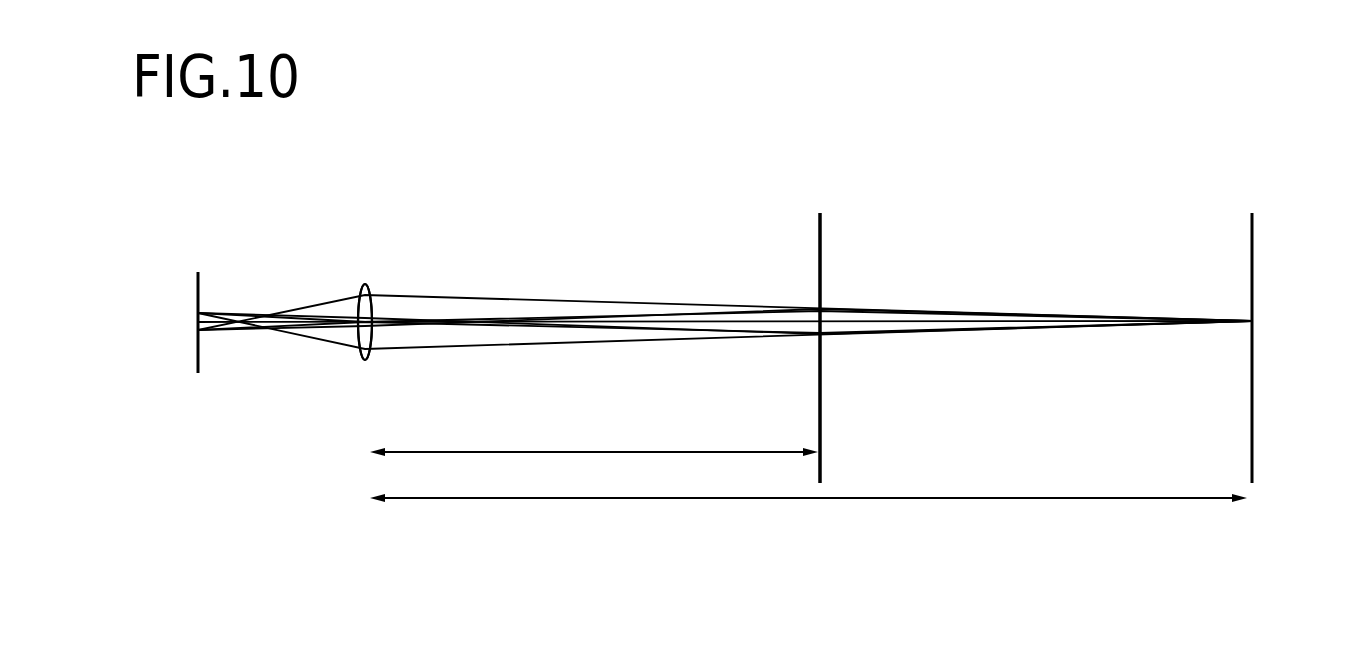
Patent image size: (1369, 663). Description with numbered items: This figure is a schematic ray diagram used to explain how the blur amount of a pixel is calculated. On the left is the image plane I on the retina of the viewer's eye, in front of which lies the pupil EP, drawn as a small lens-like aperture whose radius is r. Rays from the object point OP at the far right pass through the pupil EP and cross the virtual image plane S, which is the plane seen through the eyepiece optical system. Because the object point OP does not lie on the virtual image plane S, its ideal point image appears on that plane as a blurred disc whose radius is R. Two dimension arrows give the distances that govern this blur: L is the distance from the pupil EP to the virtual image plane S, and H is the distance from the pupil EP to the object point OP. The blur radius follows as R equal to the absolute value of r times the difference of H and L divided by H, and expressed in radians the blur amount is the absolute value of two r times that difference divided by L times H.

The image plane I is at (200, 284).
The radius of the pupil r is at (366, 310).
The pupil EP is at (365, 352).
The radius of a blurred image R is at (822, 320).
The virtual image plane S is at (822, 415).
The object point OP is at (1254, 340).
The distance from the pupil to the virtual image plane L is at (594, 433).
The distance from the pupil to the object point H is at (808, 517).